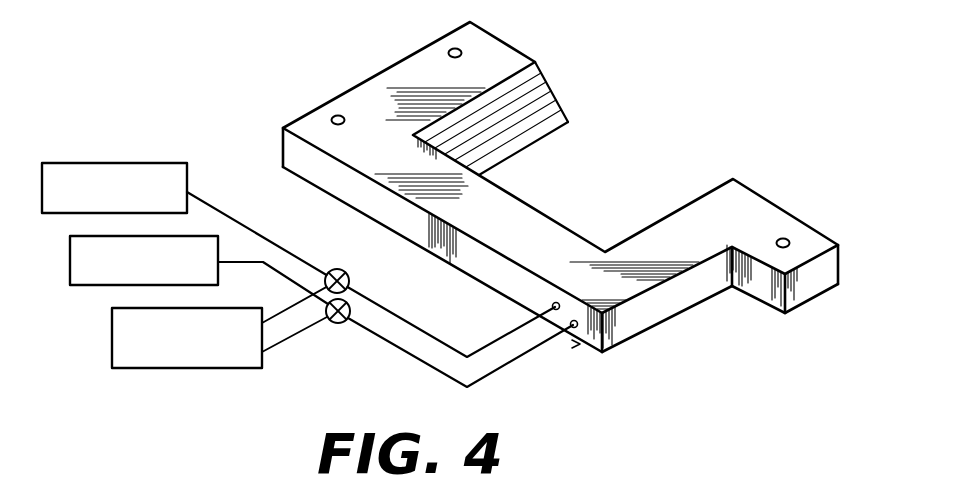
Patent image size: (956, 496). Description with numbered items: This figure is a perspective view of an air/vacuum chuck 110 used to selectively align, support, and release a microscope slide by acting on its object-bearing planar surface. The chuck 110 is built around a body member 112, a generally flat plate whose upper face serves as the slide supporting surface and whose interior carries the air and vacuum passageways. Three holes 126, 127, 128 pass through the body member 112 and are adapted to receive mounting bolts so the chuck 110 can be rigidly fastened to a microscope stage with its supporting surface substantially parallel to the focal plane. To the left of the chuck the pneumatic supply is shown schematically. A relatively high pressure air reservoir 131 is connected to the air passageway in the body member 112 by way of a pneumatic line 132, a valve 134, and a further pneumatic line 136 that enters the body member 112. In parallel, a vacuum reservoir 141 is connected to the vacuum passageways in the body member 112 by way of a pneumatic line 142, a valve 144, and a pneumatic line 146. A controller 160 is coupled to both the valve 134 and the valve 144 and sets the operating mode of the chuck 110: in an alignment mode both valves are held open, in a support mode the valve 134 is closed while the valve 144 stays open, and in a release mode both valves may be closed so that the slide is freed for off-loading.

The chuck 110 is at (651, 132).
The body member 112 is at (362, 83).
The hole 126 is at (786, 239).
The hole 127 is at (333, 118).
The hole 128 is at (449, 51).
The air reservoir 131 is at (70, 262).
The pneumatic line 132 is at (282, 274).
The valve 134 is at (346, 324).
The pneumatic line 136 is at (416, 358).
The vacuum reservoir 141 is at (139, 162).
The pneumatic line 142 is at (236, 215).
The valve 144 is at (351, 280).
The pneumatic line 146 is at (402, 319).
The controller 160 is at (112, 339).